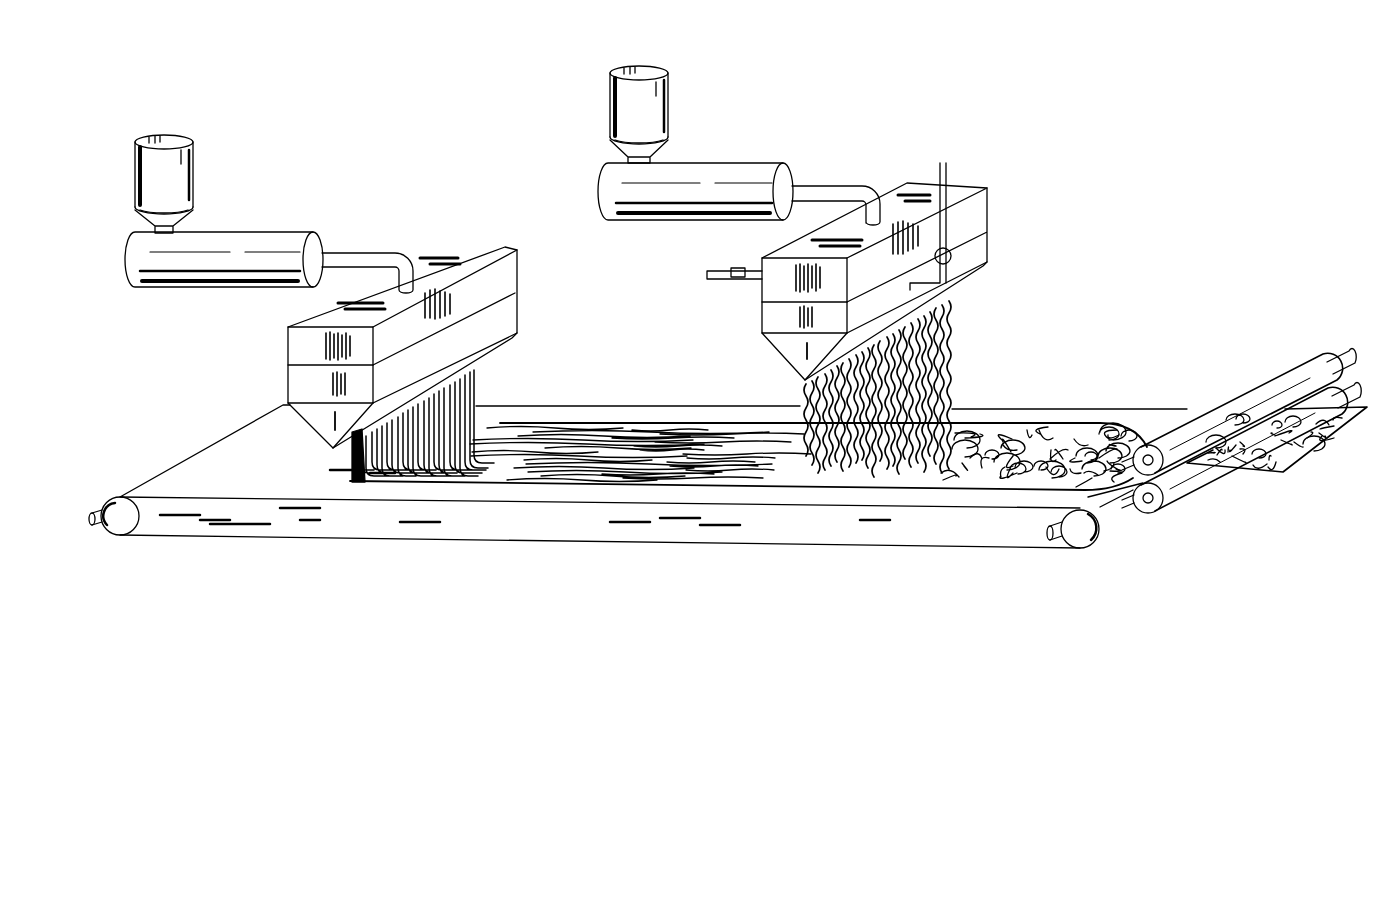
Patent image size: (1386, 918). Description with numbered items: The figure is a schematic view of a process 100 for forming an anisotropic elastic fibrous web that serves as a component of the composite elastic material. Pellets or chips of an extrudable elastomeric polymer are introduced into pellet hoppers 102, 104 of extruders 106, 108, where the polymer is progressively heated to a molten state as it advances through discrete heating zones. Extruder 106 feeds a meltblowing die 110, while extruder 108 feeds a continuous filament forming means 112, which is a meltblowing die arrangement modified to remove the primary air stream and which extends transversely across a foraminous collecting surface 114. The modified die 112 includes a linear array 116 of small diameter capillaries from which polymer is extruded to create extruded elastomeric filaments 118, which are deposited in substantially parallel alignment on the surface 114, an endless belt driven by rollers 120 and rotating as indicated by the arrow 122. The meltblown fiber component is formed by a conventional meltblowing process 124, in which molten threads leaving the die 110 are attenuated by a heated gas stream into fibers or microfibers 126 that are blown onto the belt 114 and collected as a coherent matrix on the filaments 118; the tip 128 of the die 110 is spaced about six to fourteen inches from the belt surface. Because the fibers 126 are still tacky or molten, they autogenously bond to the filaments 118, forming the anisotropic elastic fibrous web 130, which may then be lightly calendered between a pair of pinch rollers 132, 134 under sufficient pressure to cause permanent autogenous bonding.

The process for forming an anisotropic elastic fibrous web 100 is at (1092, 84).
The pellet hopper 102 is at (612, 104).
The pellet hopper 104 is at (135, 184).
The extruder 106 is at (698, 177).
The extruder 108 is at (275, 235).
The meltblowing die 110 is at (995, 212).
The continuous filament forming means 112 is at (446, 244).
The foraminous collecting surface 114 is at (198, 445).
The linear array of capillaries 116 is at (338, 454).
The extruded elastomeric filaments 118 is at (532, 426).
The rollers 120 is at (594, 522).
The arrow 122 is at (880, 565).
The meltblowing process 124 is at (802, 128).
The meltblown fibers or microfibers 126 is at (964, 346).
The die tip 128 is at (780, 388).
The anisotropic elastic fibrous web 130 is at (1078, 433).
The pinch roller 132 is at (1293, 370).
The pinch roller 134 is at (1196, 489).